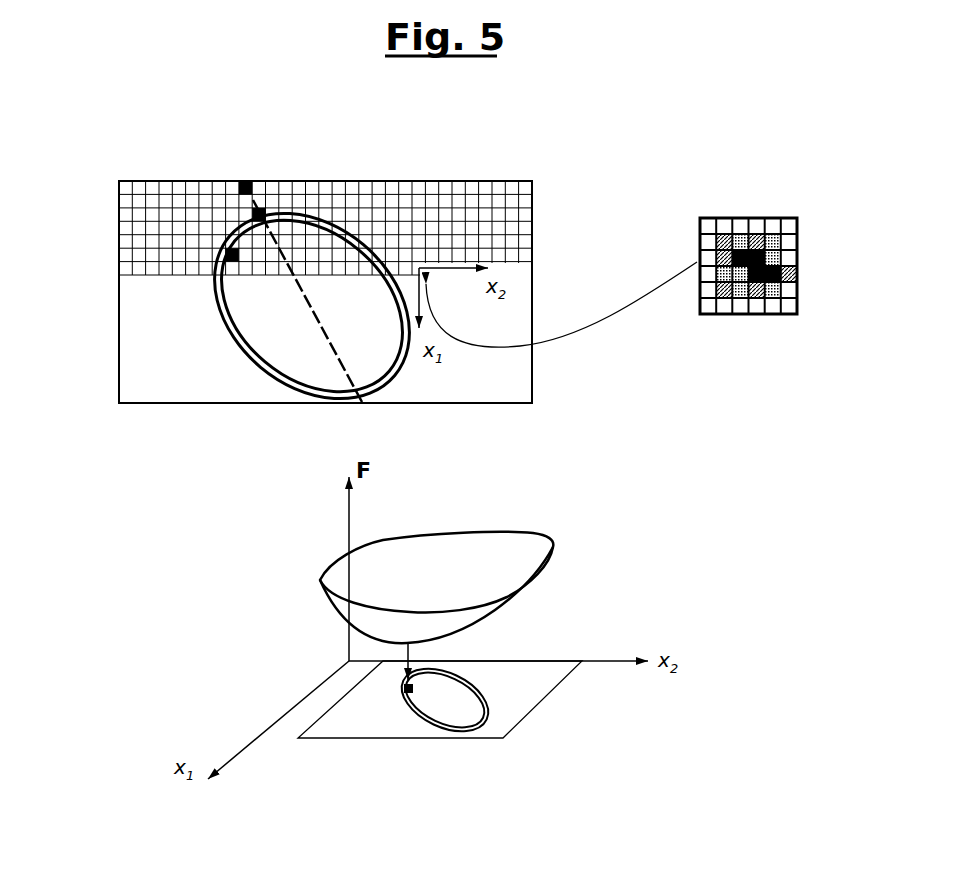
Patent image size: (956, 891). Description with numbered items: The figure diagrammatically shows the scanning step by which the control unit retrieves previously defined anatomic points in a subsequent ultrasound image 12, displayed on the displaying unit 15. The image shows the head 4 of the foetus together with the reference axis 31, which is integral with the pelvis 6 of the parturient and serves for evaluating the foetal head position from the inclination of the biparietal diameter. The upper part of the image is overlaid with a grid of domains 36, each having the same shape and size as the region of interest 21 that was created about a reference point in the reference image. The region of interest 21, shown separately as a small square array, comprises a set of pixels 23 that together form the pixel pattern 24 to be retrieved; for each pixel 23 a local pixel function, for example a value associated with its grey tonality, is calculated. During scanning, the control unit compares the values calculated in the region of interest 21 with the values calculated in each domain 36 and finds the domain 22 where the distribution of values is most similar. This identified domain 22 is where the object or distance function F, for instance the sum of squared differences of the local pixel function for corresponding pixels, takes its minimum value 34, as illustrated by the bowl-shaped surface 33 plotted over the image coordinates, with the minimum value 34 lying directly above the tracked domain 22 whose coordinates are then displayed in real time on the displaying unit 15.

The displaying unit 15 is at (143, 172).
The pelvis 6 is at (248, 217).
The domains 36 is at (140, 256).
The domain 22 is at (260, 208).
The reference axis 31 is at (290, 260).
The head 4 is at (385, 275).
The ultrasound image 12 is at (244, 367).
The region of interest 21 is at (726, 210).
The pixel pattern 24 is at (785, 262).
The pixels 23 is at (757, 305).
The weighting function surface 33 is at (440, 615).
The minimum value 34 is at (403, 643).